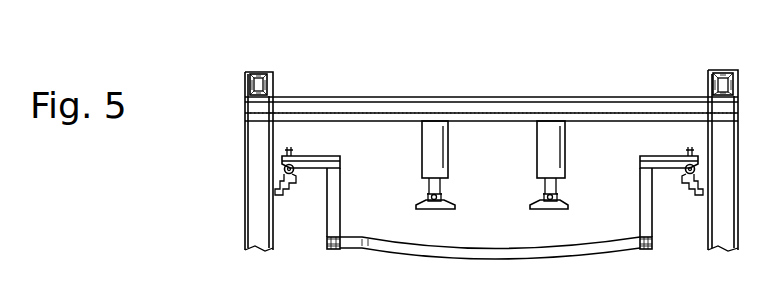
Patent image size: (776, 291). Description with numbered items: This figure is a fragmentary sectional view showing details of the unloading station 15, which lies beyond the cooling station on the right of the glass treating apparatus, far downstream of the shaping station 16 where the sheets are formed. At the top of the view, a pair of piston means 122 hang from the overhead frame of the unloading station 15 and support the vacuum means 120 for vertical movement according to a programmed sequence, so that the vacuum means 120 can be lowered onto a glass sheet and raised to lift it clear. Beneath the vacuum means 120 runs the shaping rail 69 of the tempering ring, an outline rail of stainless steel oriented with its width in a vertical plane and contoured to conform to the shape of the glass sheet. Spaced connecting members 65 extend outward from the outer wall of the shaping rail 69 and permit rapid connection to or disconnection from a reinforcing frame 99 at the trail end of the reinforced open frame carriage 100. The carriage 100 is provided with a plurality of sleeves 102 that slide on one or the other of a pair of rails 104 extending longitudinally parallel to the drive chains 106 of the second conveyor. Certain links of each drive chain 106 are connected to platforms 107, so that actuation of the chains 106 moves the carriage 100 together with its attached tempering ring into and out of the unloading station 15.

The unloading station 15 is at (504, 60).
The reinforced open frame carriage 100 is at (588, 267).
The shaping rail 69 is at (480, 256).
The connecting members 65 is at (339, 249).
The reinforcing frame 99 is at (654, 246).
The piston means 122 is at (540, 142).
The vacuum means 120 is at (545, 209).
The platforms 107 is at (328, 157).
The sleeves 102 is at (296, 170).
The drive chains 106 is at (294, 152).
The rails 104 is at (296, 178).
The shaping station 16 is at (77, 290).